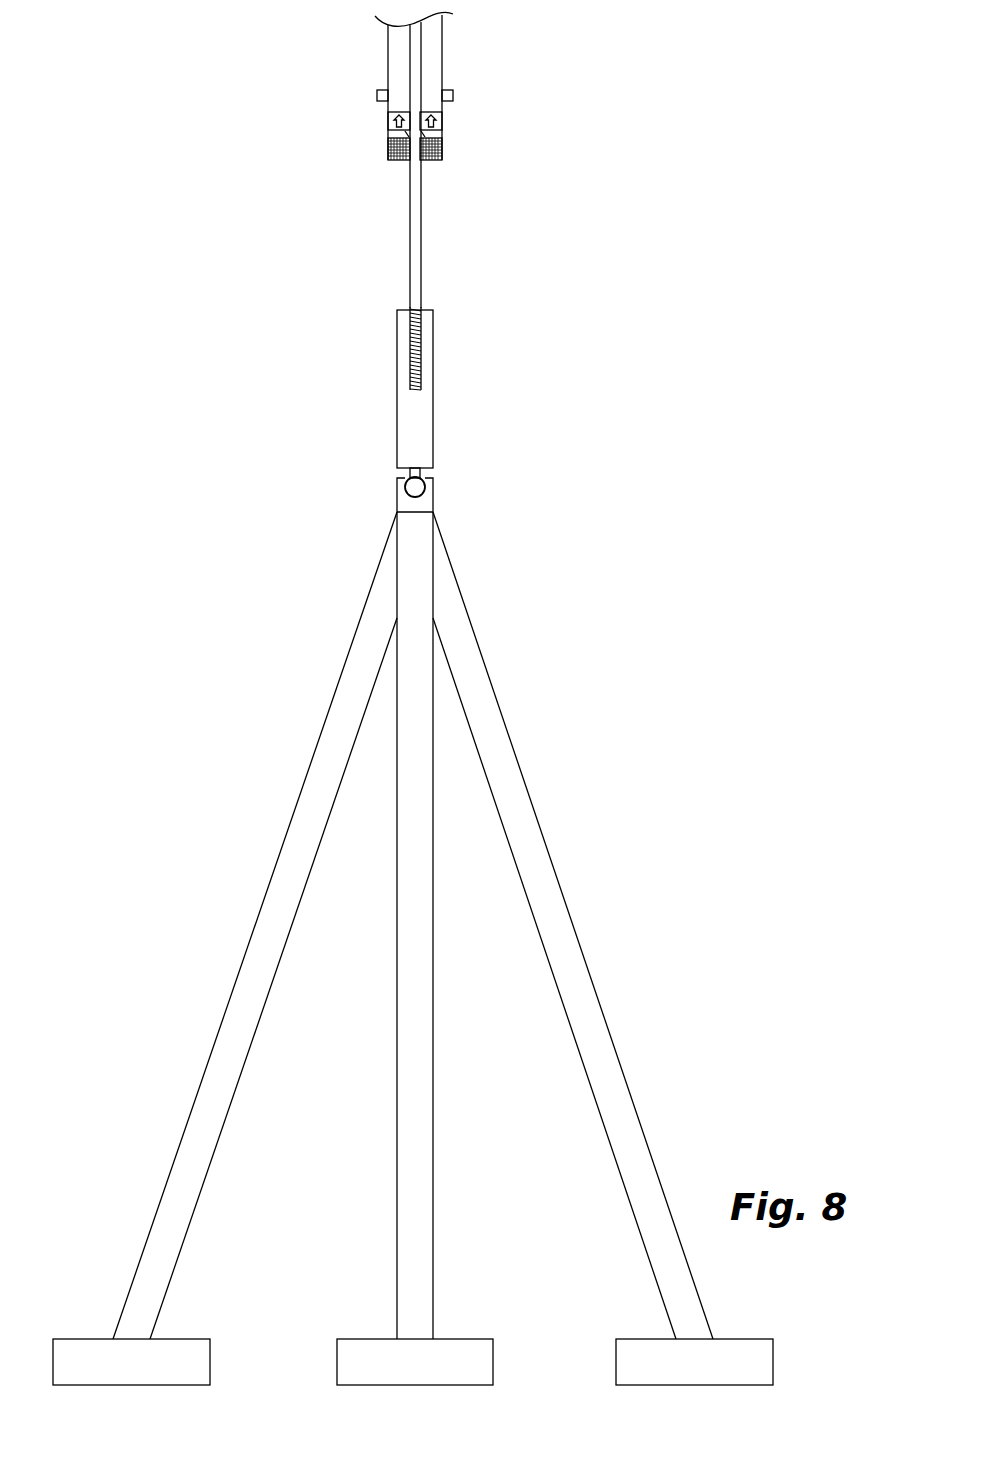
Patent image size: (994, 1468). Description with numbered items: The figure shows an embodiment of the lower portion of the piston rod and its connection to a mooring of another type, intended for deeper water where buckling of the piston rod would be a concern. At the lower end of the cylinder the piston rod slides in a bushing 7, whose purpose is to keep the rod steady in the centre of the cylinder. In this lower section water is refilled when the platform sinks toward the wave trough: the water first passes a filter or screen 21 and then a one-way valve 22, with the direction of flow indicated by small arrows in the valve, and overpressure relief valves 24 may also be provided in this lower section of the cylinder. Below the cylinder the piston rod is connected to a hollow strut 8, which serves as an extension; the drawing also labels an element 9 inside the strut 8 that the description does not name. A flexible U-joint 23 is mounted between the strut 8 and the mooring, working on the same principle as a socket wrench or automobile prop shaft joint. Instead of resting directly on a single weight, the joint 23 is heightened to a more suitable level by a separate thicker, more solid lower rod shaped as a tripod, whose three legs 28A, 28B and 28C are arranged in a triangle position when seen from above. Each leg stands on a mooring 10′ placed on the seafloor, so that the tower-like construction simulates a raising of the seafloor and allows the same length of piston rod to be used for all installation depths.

The bushing 7 is at (423, 134).
The hollow strut 8 is at (400, 413).
The spring 9 is at (412, 355).
The mooring 10′ is at (187, 1340).
The filter or screen 21 is at (388, 145).
The one-way valve 22 is at (388, 132).
The flexible U-joint 23 is at (410, 485).
The overpressure relief valve 24 is at (377, 95).
The leg 28A is at (255, 972).
The leg 28B is at (418, 1035).
The leg 28C is at (587, 1000).